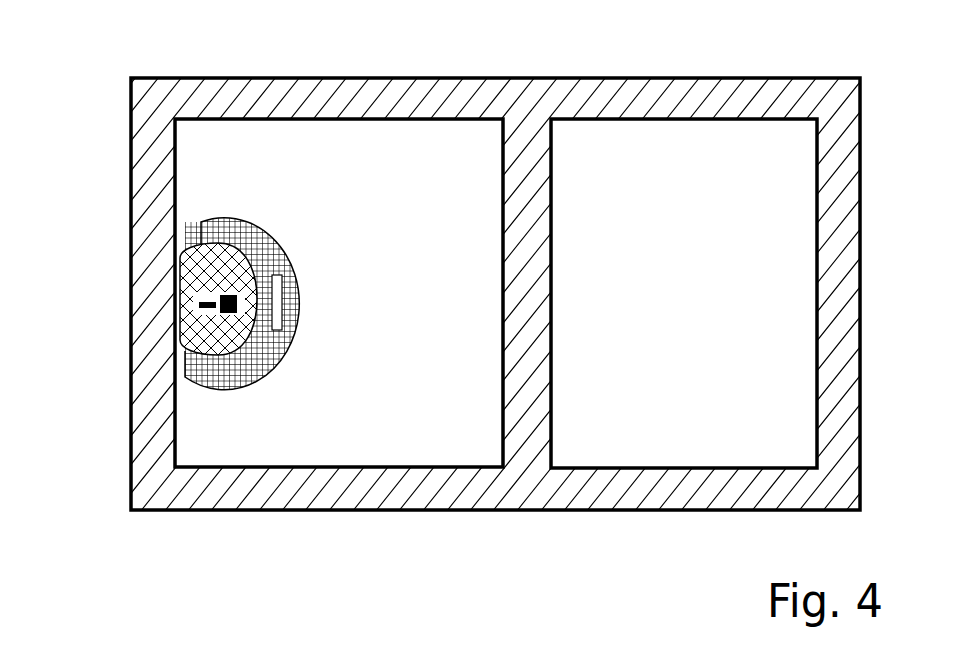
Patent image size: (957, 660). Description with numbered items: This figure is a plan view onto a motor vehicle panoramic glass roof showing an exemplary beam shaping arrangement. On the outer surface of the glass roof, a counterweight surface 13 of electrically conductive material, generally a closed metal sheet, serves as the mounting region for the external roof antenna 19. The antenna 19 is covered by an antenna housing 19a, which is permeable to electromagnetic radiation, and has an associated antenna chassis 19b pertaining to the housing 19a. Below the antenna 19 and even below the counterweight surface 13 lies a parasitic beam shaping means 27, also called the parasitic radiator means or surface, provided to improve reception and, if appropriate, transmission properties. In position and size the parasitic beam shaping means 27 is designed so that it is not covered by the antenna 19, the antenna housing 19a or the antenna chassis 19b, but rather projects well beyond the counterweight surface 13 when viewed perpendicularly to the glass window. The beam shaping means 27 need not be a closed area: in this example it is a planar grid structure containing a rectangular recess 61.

The counterweight surface 13 is at (210, 268).
The antenna 19 is at (207, 319).
The antenna housing 19a is at (224, 318).
The antenna chassis 19b is at (205, 312).
The parasitic beam shaping means 27 is at (258, 358).
The rectangular recess 61 is at (277, 299).